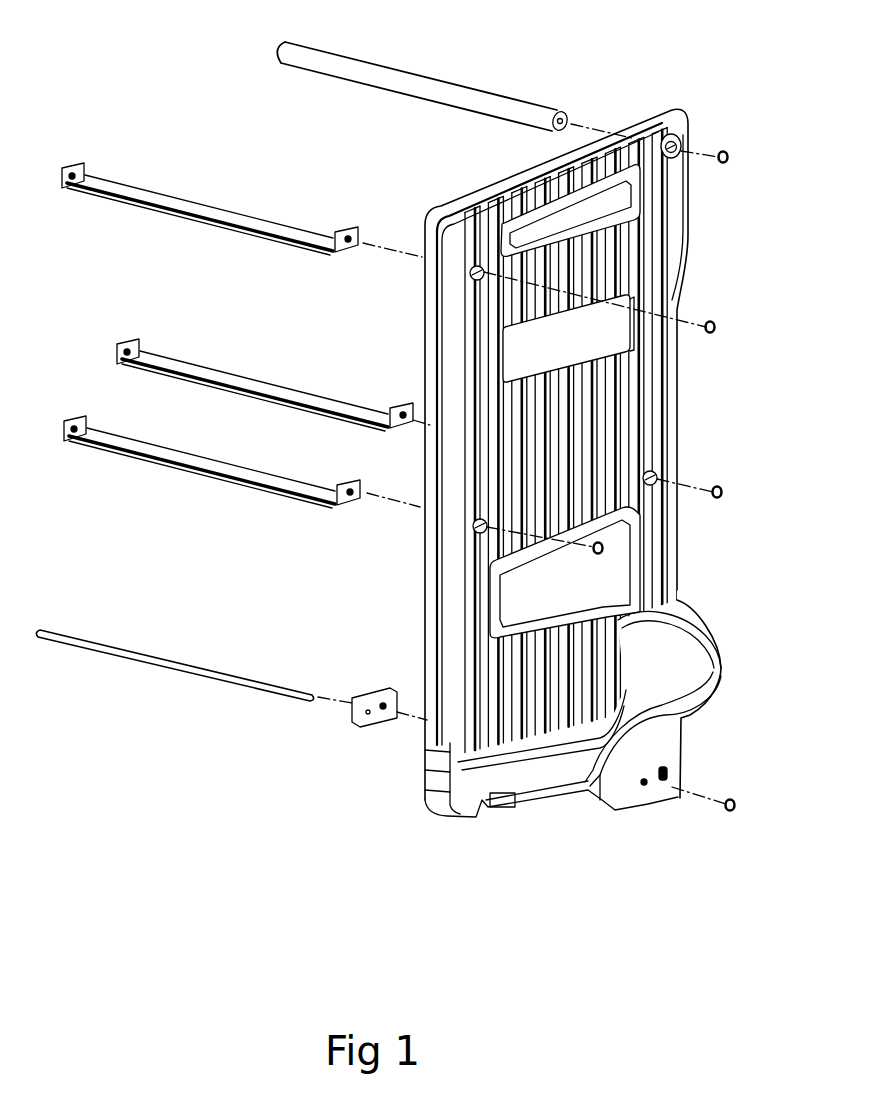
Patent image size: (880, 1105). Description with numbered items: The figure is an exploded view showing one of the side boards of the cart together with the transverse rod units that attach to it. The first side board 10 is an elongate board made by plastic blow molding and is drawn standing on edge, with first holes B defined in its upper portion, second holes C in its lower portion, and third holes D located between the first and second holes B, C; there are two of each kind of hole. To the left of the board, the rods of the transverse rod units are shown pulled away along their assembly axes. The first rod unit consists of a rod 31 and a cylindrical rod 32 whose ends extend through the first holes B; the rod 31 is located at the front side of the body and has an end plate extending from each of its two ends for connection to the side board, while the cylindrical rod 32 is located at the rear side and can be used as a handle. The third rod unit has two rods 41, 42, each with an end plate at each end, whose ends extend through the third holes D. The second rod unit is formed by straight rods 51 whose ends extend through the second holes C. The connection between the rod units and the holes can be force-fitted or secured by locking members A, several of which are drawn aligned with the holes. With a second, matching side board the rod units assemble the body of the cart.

The first side board 10 is at (664, 216).
The rod 31 is at (200, 205).
The cylindrical rod 32 is at (434, 82).
The rod 41 is at (153, 457).
The rod 42 is at (237, 373).
The straight rod 51 is at (187, 673).
The locking member A is at (721, 497).
The first hole B is at (690, 143).
The second hole C is at (667, 772).
The third hole D is at (656, 475).